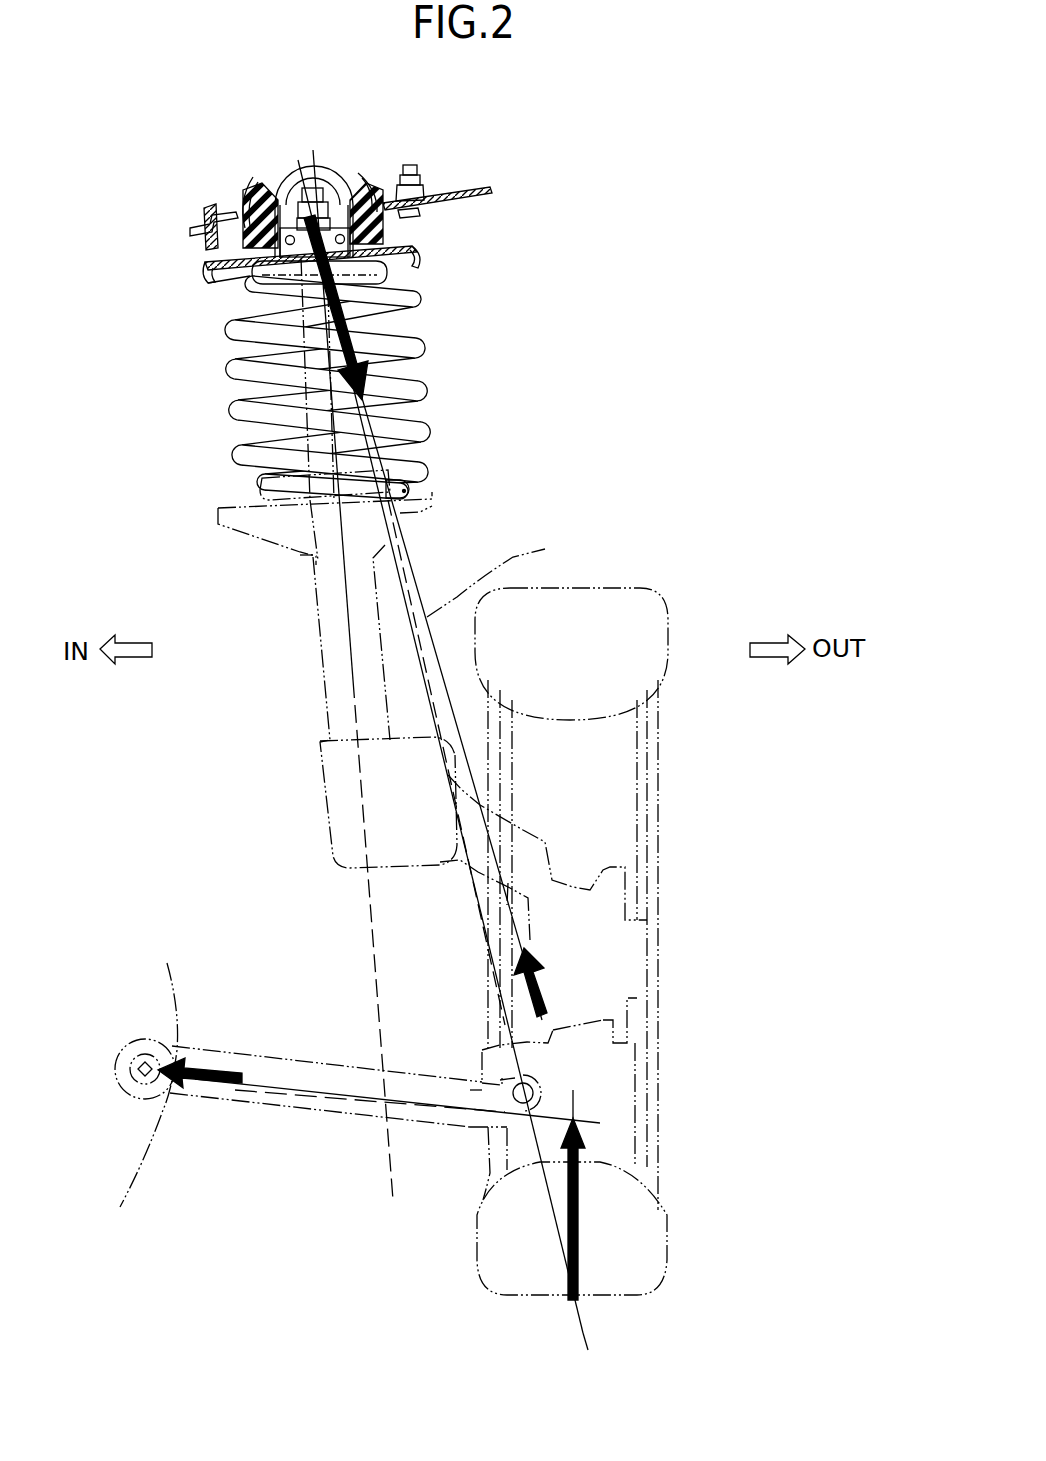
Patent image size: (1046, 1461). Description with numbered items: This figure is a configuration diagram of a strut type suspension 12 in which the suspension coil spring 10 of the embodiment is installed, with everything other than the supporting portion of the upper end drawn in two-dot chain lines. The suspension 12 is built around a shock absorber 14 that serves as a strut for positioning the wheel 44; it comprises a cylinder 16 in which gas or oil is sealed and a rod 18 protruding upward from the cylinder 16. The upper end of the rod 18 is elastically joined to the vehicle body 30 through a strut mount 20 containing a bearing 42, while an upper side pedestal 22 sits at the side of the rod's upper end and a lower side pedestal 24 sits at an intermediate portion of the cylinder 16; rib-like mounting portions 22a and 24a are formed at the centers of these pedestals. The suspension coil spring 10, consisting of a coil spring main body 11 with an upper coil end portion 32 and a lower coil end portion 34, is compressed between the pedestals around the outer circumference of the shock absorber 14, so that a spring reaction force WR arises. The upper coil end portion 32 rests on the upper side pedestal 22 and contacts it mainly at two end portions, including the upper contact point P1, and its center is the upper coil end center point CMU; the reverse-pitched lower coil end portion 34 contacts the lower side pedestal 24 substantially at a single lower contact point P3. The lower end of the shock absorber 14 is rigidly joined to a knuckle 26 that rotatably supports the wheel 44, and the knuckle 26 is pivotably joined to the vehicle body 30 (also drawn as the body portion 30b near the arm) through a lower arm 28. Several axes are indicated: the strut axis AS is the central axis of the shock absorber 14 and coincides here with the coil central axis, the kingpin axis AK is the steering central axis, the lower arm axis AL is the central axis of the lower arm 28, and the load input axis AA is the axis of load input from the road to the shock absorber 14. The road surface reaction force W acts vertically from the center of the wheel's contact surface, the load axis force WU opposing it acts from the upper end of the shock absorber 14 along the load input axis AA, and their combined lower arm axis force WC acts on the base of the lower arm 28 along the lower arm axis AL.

The suspension coil spring 10 is at (432, 325).
The coil spring main body 11 is at (418, 348).
The strut type suspension 12 is at (543, 495).
The shock absorber 14 is at (130, 444).
The cylinder 16 is at (325, 433).
The rod 18 is at (236, 355).
The strut mount 20 is at (358, 156).
The upper side pedestal 22 is at (200, 262).
The mounting portion 22a is at (255, 285).
The lower side pedestal 24 is at (436, 510).
The mounting portion 24a is at (262, 490).
The knuckle 26 is at (330, 806).
The lower arm 28 is at (268, 1060).
The vehicle body 30 is at (472, 188).
The vehicle body (lower) 30b is at (145, 1185).
The upper coil end portion 32 is at (387, 279).
The lower coil end portion 34 is at (405, 488).
The bearing 42 is at (287, 187).
The wheel 44 is at (668, 606).
The load input axis AA is at (538, 576).
The kingpin axis AK is at (462, 848).
The lower arm axis AL is at (298, 1110).
The strut axis AS is at (340, 636).
The upper coil end center point CMU is at (210, 216).
The upper contact point P1 is at (290, 236).
The lower contact point P3 is at (403, 492).
The road surface reaction force W is at (585, 1228).
The lower arm axis force WC is at (210, 1085).
The spring reaction force WR is at (540, 1000).
The load axis force WU is at (395, 314).